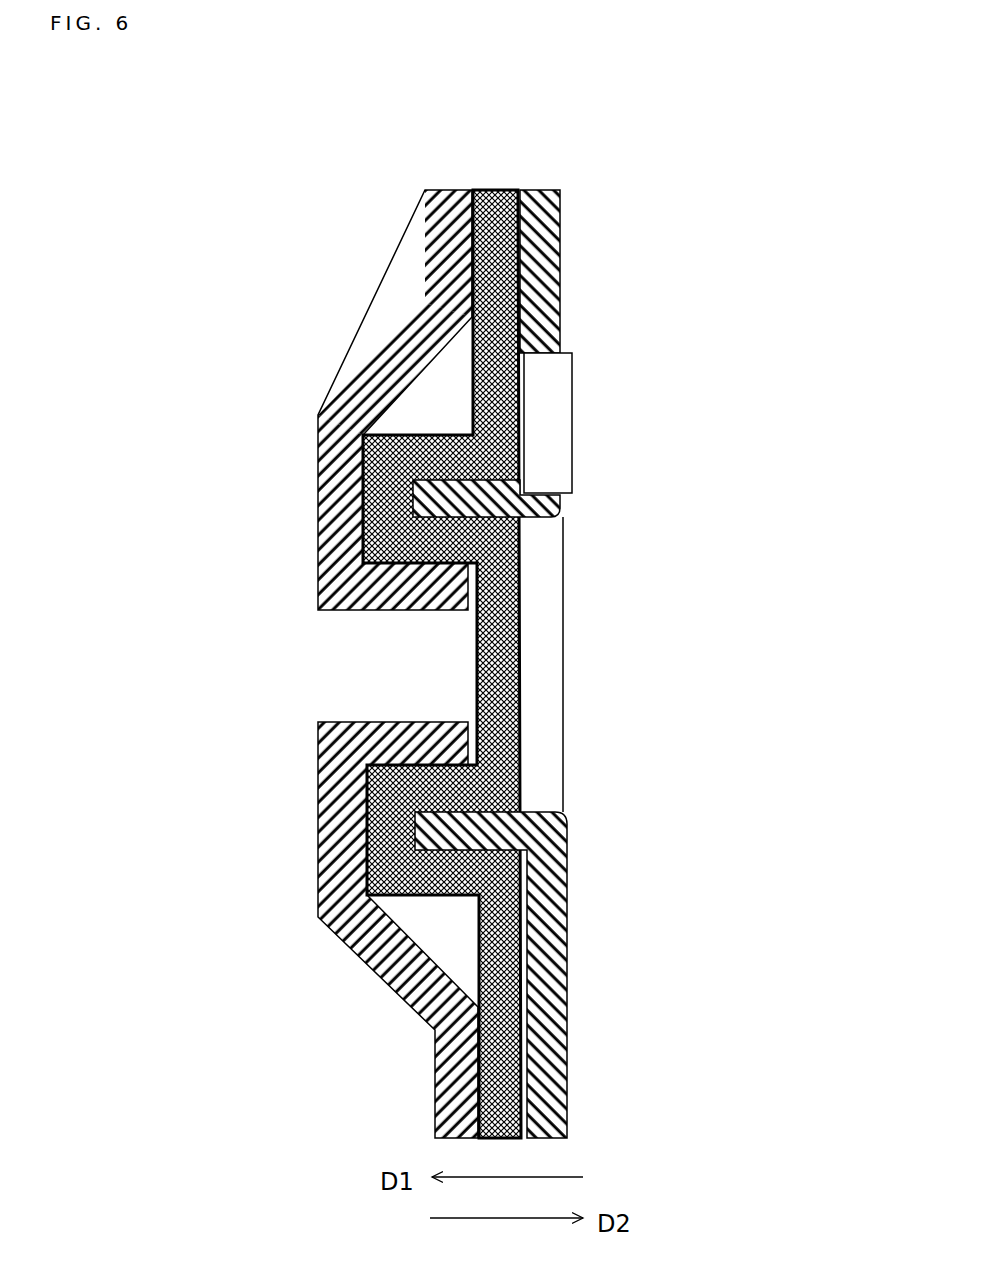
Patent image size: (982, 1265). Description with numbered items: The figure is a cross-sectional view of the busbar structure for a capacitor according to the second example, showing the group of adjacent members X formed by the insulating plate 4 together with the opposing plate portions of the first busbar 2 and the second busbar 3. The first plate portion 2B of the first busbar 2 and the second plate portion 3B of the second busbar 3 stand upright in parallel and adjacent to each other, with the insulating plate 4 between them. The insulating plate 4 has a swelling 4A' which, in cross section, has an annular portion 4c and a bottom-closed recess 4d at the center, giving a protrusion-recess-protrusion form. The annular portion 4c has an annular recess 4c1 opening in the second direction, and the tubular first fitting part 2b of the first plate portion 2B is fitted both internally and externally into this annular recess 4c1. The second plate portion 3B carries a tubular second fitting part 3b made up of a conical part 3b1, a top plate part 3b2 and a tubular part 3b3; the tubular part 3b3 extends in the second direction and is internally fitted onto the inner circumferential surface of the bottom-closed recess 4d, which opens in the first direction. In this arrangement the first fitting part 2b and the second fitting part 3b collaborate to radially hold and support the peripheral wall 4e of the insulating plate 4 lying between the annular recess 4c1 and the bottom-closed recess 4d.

The group of adjacent members X is at (607, 190).
The first busbar 2 is at (537, 626).
The first plate portion 2B is at (538, 275).
The first fitting part 2b is at (500, 555).
The second busbar 3 is at (434, 626).
The second plate portion 3B is at (440, 250).
The second fitting part 3b is at (413, 613).
The conical part 3b1 is at (383, 347).
The top plate part 3b2 is at (342, 513).
The tubular part 3b3 is at (378, 597).
The insulating plate 4 is at (430, 626).
The swelling 4A' is at (353, 405).
The annular portion 4c is at (383, 485).
The annular recess 4c1 is at (472, 505).
The bottom-closed recess 4d is at (423, 762).
The peripheral wall 4e is at (412, 540).